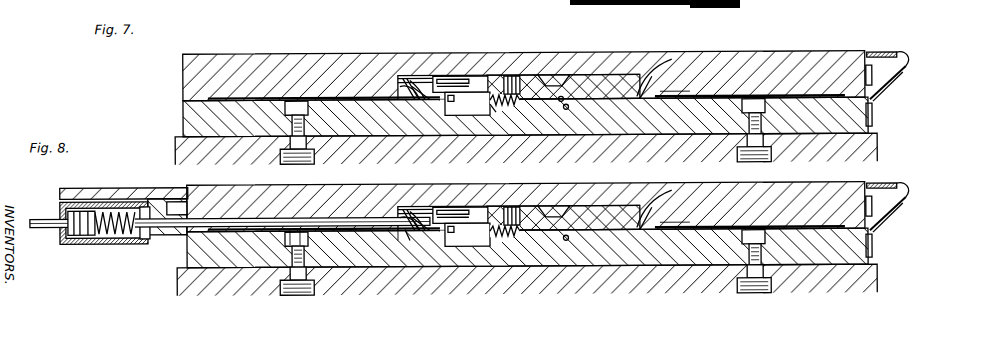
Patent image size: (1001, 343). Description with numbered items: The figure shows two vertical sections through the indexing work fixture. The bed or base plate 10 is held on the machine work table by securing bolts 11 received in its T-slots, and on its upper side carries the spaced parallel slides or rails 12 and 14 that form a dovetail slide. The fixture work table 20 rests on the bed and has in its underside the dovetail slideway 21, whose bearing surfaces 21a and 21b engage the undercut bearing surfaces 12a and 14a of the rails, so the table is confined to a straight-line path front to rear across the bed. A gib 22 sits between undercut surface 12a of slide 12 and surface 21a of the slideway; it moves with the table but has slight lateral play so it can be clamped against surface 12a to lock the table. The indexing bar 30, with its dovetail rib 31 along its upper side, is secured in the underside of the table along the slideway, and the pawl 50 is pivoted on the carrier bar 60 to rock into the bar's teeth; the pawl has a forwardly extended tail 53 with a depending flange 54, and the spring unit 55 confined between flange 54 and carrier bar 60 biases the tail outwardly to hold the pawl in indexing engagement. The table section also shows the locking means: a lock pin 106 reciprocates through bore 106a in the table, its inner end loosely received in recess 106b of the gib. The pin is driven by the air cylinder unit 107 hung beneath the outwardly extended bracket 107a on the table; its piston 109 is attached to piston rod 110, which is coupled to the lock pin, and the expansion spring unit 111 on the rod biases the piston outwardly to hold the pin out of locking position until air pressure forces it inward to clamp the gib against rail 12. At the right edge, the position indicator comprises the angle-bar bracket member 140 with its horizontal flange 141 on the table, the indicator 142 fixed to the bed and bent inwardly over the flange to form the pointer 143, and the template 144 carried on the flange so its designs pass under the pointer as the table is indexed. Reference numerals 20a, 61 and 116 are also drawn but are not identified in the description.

In FIG. 7, the bed or base plate 10 is at (852, 127).
In FIG. 8, the bed or base plate 10 is at (852, 258).
In FIG. 7, the securing bolts 11 is at (292, 124).
In FIG. 8, the securing bolts 11 is at (525, 263).
In FIG. 7, the slide or rail 12 is at (396, 78).
In FIG. 8, the slide or rail 12 is at (428, 215).
In FIG. 7, the undercut bearing surface 12a is at (406, 97).
In FIG. 8, the undercut bearing surface 12a is at (410, 210).
In FIG. 7, the slide or rail 14 is at (637, 75).
In FIG. 8, the slide or rail 14 is at (637, 206).
In FIG. 7, the undercut bearing surface 14a is at (682, 83).
In FIG. 8, the undercut bearing surface 14a is at (678, 220).
In FIG. 7, the fixture work table 20 is at (797, 66).
In FIG. 8, the fixture work table 20 is at (272, 210).
In FIG. 7, the slot in upper block 20a is at (662, 58).
In FIG. 7, the dovetail slideway 21 is at (418, 80).
In FIG. 8, the dovetail slideway 21 is at (420, 212).
In FIG. 7, the bearing surface 21a is at (404, 80).
In FIG. 8, the bearing surface 21a is at (400, 216).
In FIG. 7, the bearing surface 21b is at (668, 74).
In FIG. 8, the bearing surface 21b is at (665, 205).
In FIG. 7, the gib 22 is at (400, 86).
In FIG. 8, the gib 22 is at (412, 230).
In FIG. 7, the indexing bar 30 is at (556, 78).
In FIG. 8, the indexing bar 30 is at (556, 209).
In FIG. 7, the dovetail rib 31 is at (546, 76).
In FIG. 8, the dovetail rib 31 is at (546, 207).
In FIG. 7, the pawl 50 is at (490, 84).
In FIG. 8, the pawl 50 is at (490, 214).
In FIG. 7, the tail portion 53 is at (500, 110).
In FIG. 7, the flange 54 is at (471, 103).
In FIG. 8, the flange 54 is at (471, 234).
In FIG. 7, the spring unit 55 is at (506, 103).
In FIG. 8, the spring unit 55 is at (505, 231).
In FIG. 7, the carrier bar 60 is at (571, 114).
In FIG. 8, the carrier bar 60 is at (566, 241).
In FIG. 7, the contact 61 is at (570, 101).
In FIG. 8, the lock pin 106 is at (290, 236).
In FIG. 8, the bore 106a is at (302, 238).
In FIG. 8, the recess 106b is at (398, 228).
In FIG. 8, the air cylinder unit 107 is at (105, 243).
In FIG. 8, the bracket 107a is at (92, 190).
In FIG. 8, the piston 109 is at (82, 236).
In FIG. 8, the piston rod 110 is at (165, 233).
In FIG. 8, the expansion spring unit 111 is at (150, 242).
In FIG. 8, the actuating rod 116 is at (38, 216).
In FIG. 7, the bracket member 140 is at (873, 95).
In FIG. 8, the bracket member 140 is at (873, 226).
In FIG. 7, the flange 141 is at (903, 74).
In FIG. 8, the flange 141 is at (903, 205).
In FIG. 7, the indicator 142 is at (895, 82).
In FIG. 8, the indicator 142 is at (895, 213).
In FIG. 7, the pointer 143 is at (908, 60).
In FIG. 8, the pointer 143 is at (908, 190).
In FIG. 7, the template 144 is at (880, 54).
In FIG. 8, the template 144 is at (880, 185).